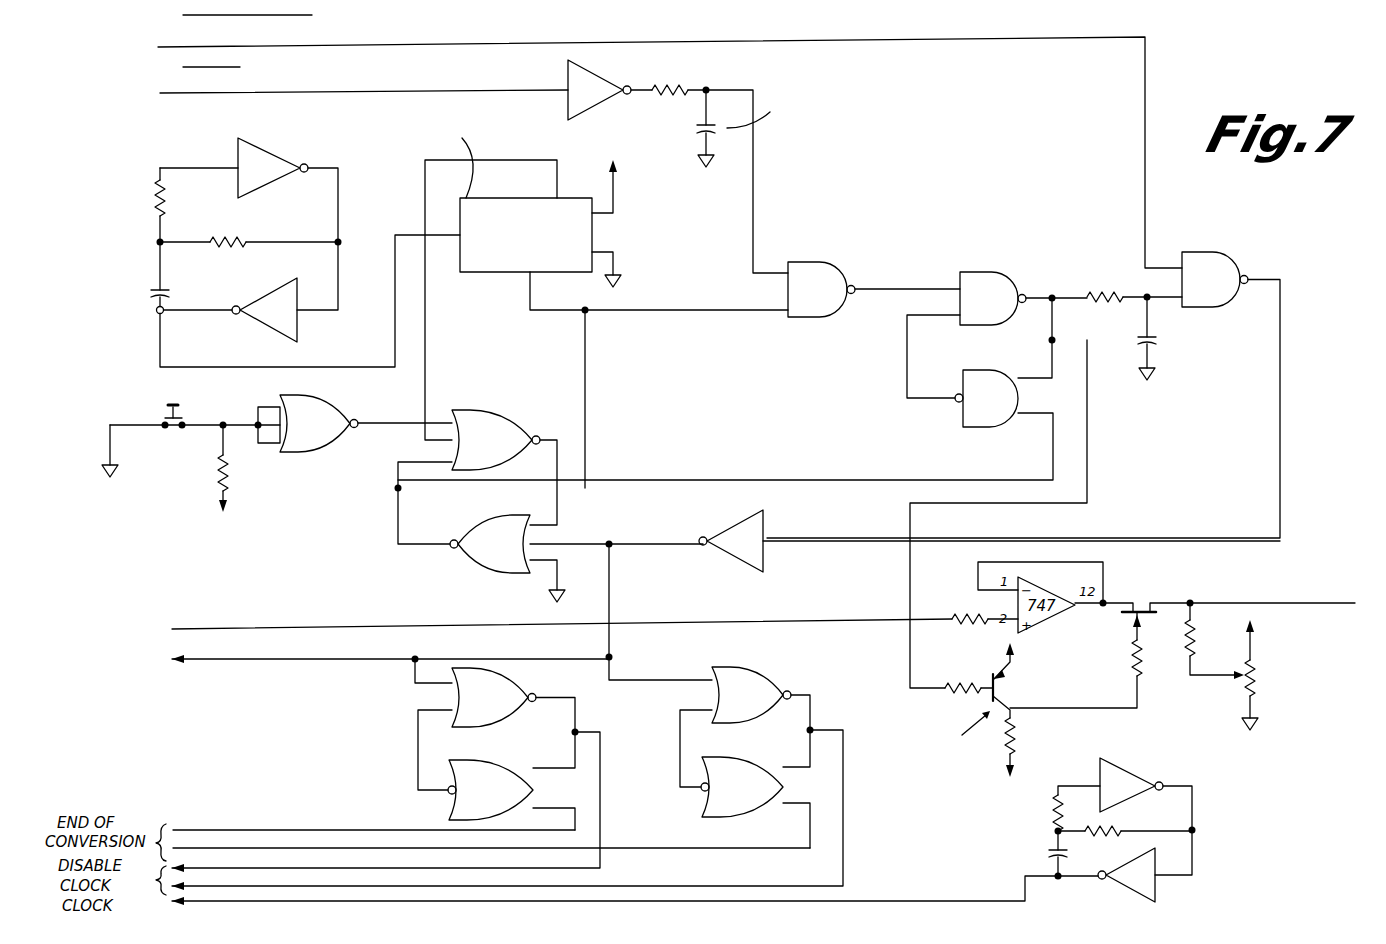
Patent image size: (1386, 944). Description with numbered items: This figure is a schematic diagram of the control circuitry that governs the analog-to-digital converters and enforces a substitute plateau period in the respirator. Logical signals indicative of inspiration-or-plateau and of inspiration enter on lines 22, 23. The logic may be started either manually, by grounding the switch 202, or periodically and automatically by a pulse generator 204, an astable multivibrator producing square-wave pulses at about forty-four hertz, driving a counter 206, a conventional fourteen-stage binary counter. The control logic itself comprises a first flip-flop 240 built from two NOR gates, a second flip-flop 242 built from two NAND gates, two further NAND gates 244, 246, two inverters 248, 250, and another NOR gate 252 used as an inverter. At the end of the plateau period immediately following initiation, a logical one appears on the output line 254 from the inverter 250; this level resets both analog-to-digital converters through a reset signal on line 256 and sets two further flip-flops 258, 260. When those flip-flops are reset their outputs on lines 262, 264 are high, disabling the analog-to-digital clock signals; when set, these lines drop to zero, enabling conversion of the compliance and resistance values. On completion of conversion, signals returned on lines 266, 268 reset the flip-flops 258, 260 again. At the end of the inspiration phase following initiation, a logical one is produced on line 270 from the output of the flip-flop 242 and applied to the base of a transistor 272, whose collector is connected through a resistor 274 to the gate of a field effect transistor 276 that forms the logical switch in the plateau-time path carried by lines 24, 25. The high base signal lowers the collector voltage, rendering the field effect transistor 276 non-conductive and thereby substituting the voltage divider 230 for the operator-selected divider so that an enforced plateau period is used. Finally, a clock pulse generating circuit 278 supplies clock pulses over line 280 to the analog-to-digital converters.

The line 22 is at (385, 47).
The line 23 is at (375, 90).
The line 24 is at (222, 629).
The line 25 is at (1267, 603).
The switch 202 is at (163, 437).
The pulse generator 204 is at (195, 162).
The counter 206 is at (472, 273).
The substitute voltage divider circuit 230 is at (1266, 674).
The first flip-flop 240 is at (377, 507).
The second flip-flop 242 is at (895, 356).
The NAND gate 244 is at (822, 262).
The NAND gate 246 is at (1215, 252).
The inverter 248 is at (590, 108).
The inverter 250 is at (728, 558).
The NOR gate 252 is at (320, 453).
The output line 254 is at (618, 544).
The line 256 is at (230, 660).
The flip-flop 258 is at (407, 738).
The flip-flop 260 is at (810, 683).
The line 262 is at (600, 862).
The line 264 is at (693, 886).
The line 266 is at (245, 830).
The line 268 is at (325, 848).
The line 270 is at (1087, 463).
The transistor 272 is at (1018, 687).
The resistor 274 is at (1150, 670).
The field effect transistor 276 is at (1138, 600).
The clock pulse generating circuit 278 is at (1203, 827).
The line 280 is at (887, 898).